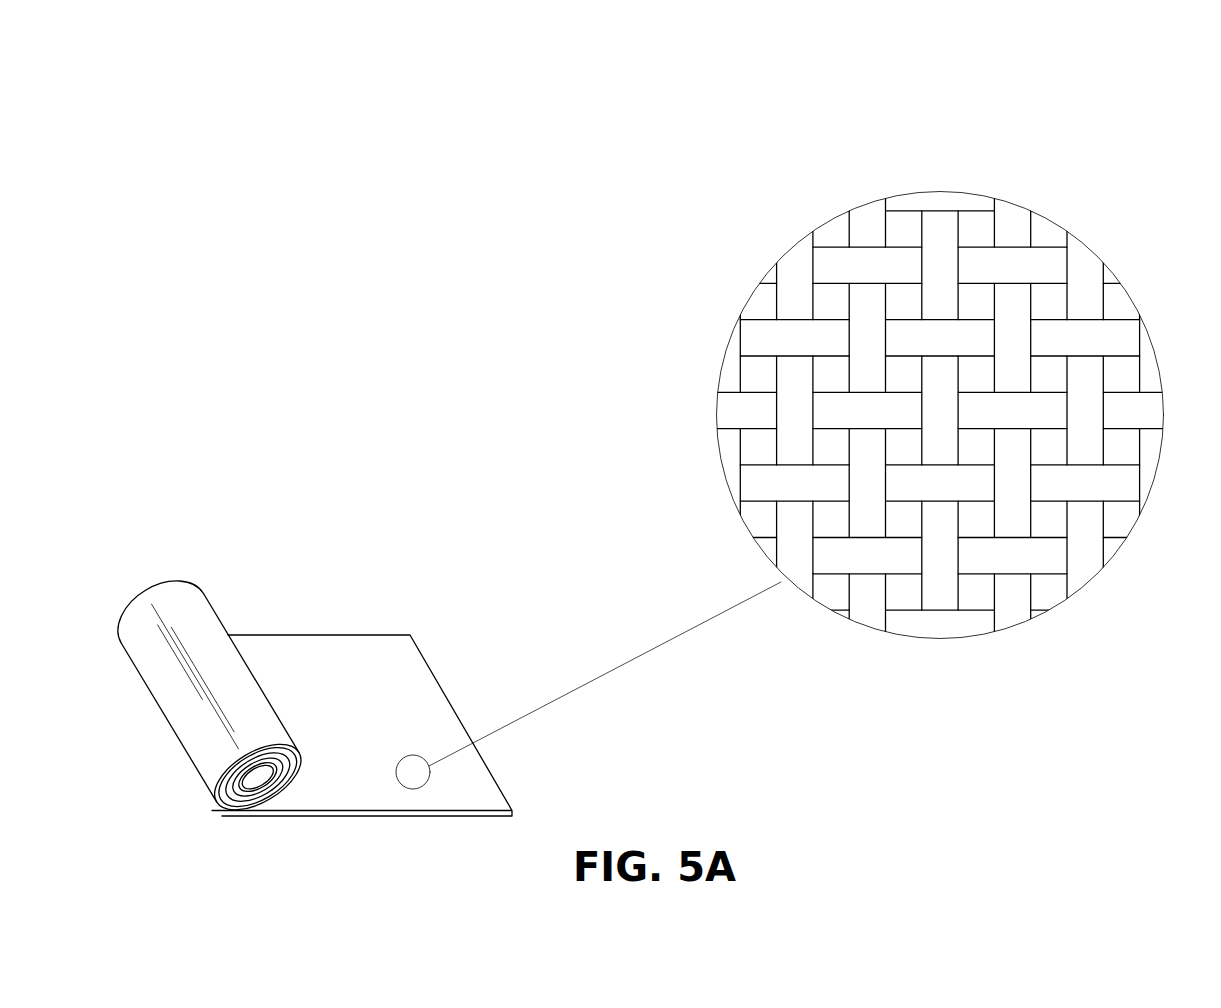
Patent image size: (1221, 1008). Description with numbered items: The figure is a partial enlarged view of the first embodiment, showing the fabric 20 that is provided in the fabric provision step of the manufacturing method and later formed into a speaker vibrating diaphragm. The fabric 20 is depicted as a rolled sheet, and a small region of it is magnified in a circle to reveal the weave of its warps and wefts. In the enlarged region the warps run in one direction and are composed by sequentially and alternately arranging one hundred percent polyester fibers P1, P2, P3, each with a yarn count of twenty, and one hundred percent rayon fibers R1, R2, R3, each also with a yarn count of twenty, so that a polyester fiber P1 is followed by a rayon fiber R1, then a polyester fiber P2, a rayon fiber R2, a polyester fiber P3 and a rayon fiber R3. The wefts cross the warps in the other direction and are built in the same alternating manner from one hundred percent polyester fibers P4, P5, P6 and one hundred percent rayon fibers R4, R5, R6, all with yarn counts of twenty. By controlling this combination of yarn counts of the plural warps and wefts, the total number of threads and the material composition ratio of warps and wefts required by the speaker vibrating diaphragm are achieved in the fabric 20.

The fabric 20 is at (343, 570).
The polyester fiber P1 is at (795, 253).
The polyester fiber P2 is at (937, 243).
The polyester fiber P3 is at (1085, 270).
The polyester fiber P4 is at (775, 282).
The polyester fiber P5 is at (733, 415).
The polyester fiber P6 is at (772, 555).
The rayon fiber R1 is at (863, 233).
The rayon fiber R2 is at (1010, 237).
The rayon fiber R3 is at (1147, 355).
The rayon fiber R4 is at (757, 348).
The rayon fiber R5 is at (757, 493).
The rayon fiber R6 is at (840, 614).